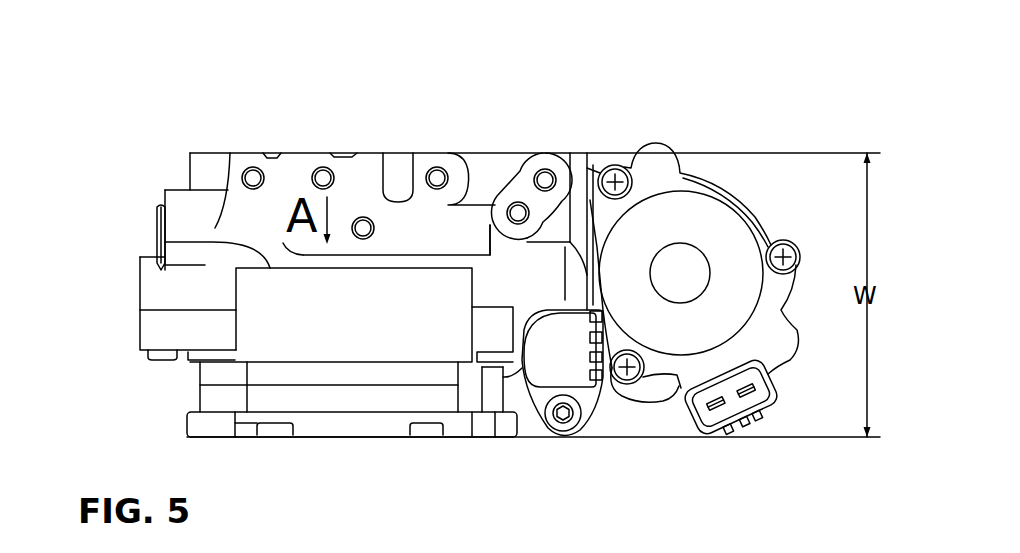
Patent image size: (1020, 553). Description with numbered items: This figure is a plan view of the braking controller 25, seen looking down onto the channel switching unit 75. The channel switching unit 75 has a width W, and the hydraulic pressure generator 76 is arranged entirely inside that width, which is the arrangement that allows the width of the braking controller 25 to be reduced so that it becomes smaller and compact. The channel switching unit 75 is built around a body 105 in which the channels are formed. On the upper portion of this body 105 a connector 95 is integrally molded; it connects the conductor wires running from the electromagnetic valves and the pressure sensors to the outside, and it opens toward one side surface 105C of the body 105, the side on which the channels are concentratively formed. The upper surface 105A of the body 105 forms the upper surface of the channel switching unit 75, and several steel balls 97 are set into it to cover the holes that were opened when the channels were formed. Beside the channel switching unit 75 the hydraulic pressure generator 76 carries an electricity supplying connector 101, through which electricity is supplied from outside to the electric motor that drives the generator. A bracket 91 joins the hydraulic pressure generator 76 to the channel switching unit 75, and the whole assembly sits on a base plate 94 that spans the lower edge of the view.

The braking controller 25 is at (111, 160).
The channel switching unit 75 is at (347, 131).
The hydraulic pressure generator 76 is at (750, 180).
The bracket 91 is at (545, 155).
The base plate 94 is at (247, 418).
The connector 95 is at (157, 243).
The steel balls 97 is at (247, 167).
The electricity supplying connector 101 is at (778, 378).
The body 105 is at (162, 292).
The upper surface 105A is at (450, 208).
The one side surface 105C is at (275, 153).